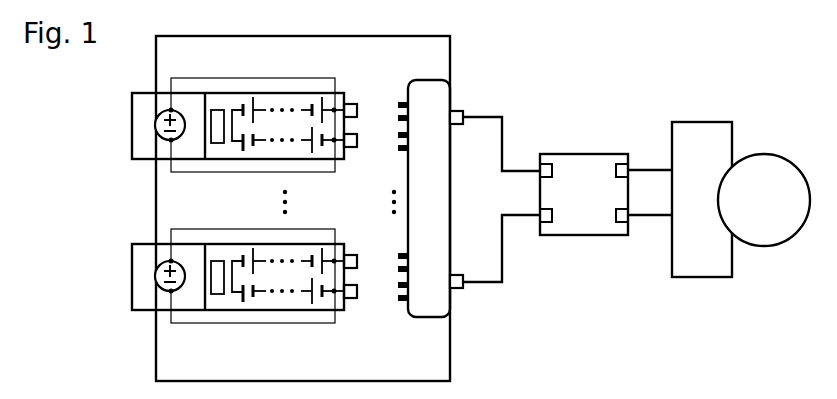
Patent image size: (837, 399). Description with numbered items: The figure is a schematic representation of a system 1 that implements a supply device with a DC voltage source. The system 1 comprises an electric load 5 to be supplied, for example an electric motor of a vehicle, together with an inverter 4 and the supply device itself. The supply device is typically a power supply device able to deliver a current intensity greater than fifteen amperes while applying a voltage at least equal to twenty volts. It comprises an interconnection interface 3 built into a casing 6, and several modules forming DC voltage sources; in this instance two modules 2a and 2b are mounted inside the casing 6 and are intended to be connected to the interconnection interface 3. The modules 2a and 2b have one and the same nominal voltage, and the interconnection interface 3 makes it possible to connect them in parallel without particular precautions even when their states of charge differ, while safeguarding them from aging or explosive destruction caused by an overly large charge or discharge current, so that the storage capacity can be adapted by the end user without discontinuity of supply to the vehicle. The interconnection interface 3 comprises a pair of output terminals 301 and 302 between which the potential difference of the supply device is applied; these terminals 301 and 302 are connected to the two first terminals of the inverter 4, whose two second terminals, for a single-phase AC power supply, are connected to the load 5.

The system 1 is at (583, 90).
The module 2a is at (132, 125).
The module 2b is at (132, 277).
The interconnection interface 3 is at (428, 318).
The output terminal 301 is at (456, 111).
The output terminal 302 is at (456, 289).
The inverter 4 is at (584, 236).
The electric load 5 is at (772, 215).
The casing 6 is at (156, 210).